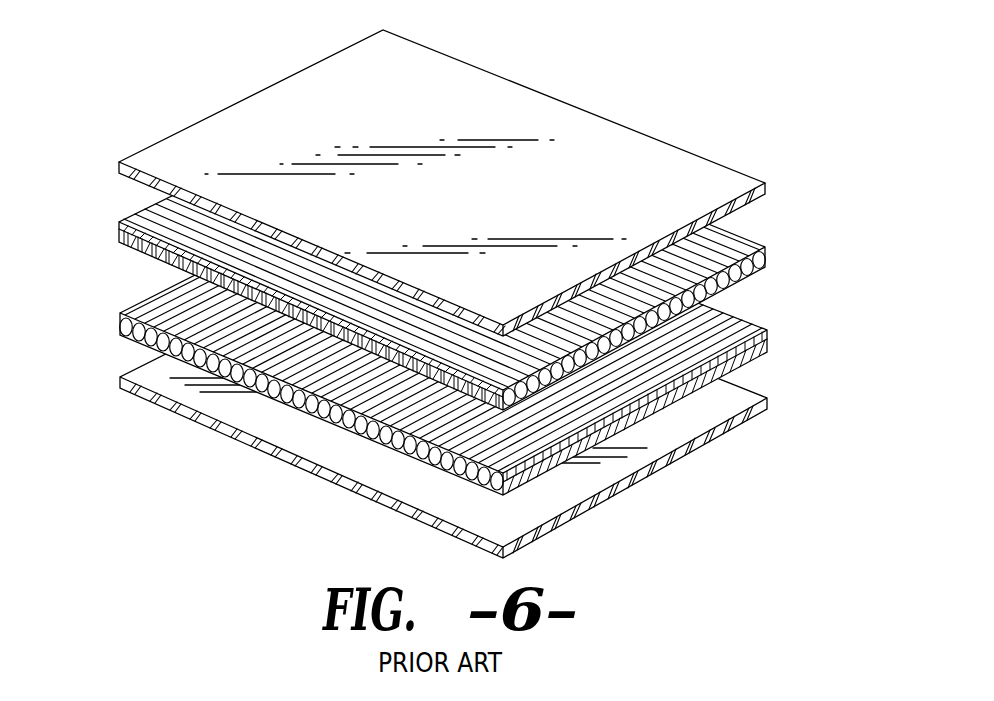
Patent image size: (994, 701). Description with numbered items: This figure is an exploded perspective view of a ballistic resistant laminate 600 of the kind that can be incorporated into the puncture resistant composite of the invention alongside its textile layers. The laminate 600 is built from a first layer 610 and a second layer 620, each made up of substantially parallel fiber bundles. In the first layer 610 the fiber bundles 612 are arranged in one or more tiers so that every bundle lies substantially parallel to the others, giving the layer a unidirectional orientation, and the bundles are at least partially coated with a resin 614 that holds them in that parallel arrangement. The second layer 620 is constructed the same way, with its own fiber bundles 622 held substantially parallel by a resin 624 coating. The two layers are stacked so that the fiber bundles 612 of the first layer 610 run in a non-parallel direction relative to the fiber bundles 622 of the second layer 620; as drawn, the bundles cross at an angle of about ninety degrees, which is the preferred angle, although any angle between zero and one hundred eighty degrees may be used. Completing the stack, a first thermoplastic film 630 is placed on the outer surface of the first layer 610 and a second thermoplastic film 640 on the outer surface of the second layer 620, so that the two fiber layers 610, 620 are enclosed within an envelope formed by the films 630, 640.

The laminate 600 is at (687, 69).
The first layer 610 is at (758, 230).
The fiber bundles 612 is at (163, 226).
The resin 614 is at (143, 254).
The second layer 620 is at (126, 301).
The fiber bundles 622 is at (719, 329).
The resin 624 is at (758, 356).
The first thermoplastic film 630 is at (686, 162).
The second thermoplastic film 640 is at (727, 432).